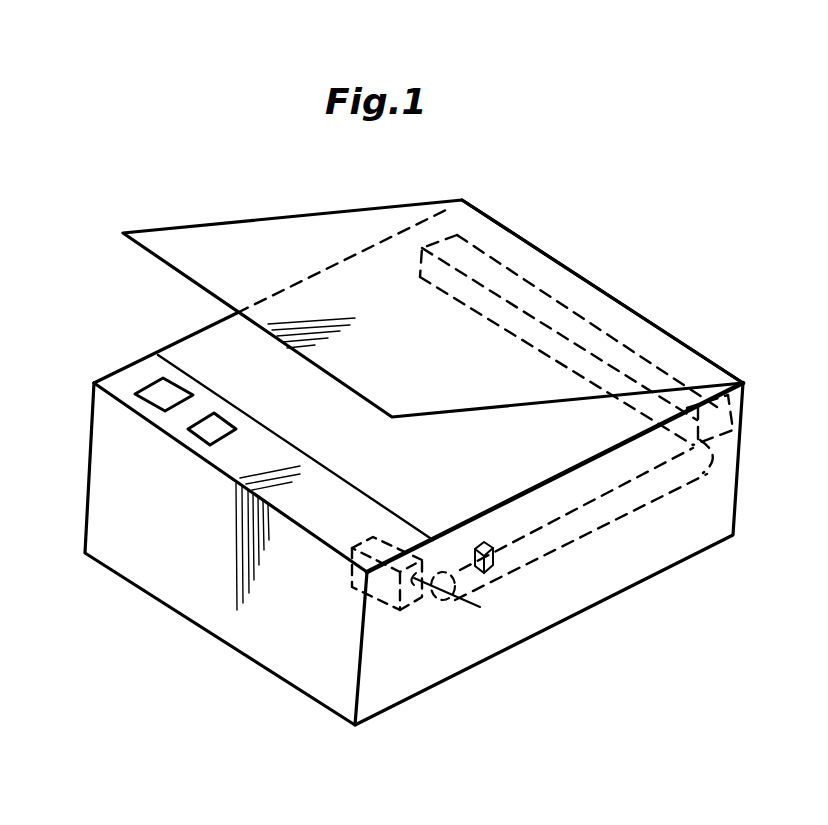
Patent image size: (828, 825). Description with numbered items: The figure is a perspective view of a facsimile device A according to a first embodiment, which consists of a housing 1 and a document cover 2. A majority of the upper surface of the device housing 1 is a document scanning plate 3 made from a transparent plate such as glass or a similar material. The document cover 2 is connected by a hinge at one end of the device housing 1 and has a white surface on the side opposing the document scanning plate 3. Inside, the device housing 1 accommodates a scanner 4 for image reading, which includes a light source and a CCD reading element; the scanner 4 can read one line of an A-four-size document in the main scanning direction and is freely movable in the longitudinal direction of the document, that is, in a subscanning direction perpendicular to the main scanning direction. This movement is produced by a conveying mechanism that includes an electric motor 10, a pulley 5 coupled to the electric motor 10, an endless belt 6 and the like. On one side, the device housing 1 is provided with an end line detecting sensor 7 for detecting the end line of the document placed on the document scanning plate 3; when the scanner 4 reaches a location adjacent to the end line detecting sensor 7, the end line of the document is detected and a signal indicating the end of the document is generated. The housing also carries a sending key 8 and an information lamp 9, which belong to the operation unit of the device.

The housing 1 is at (260, 673).
The document cover 2 is at (292, 232).
The document scanning plate 3 is at (525, 458).
The scanner 4 is at (588, 338).
The pulley 5 is at (443, 600).
The endless belt 6 is at (568, 535).
The end line detecting sensor 7 is at (485, 570).
The sending key 8 is at (160, 398).
The information lamp 9 is at (203, 428).
The electric motor 10 is at (397, 600).
The facsimile device A is at (592, 278).